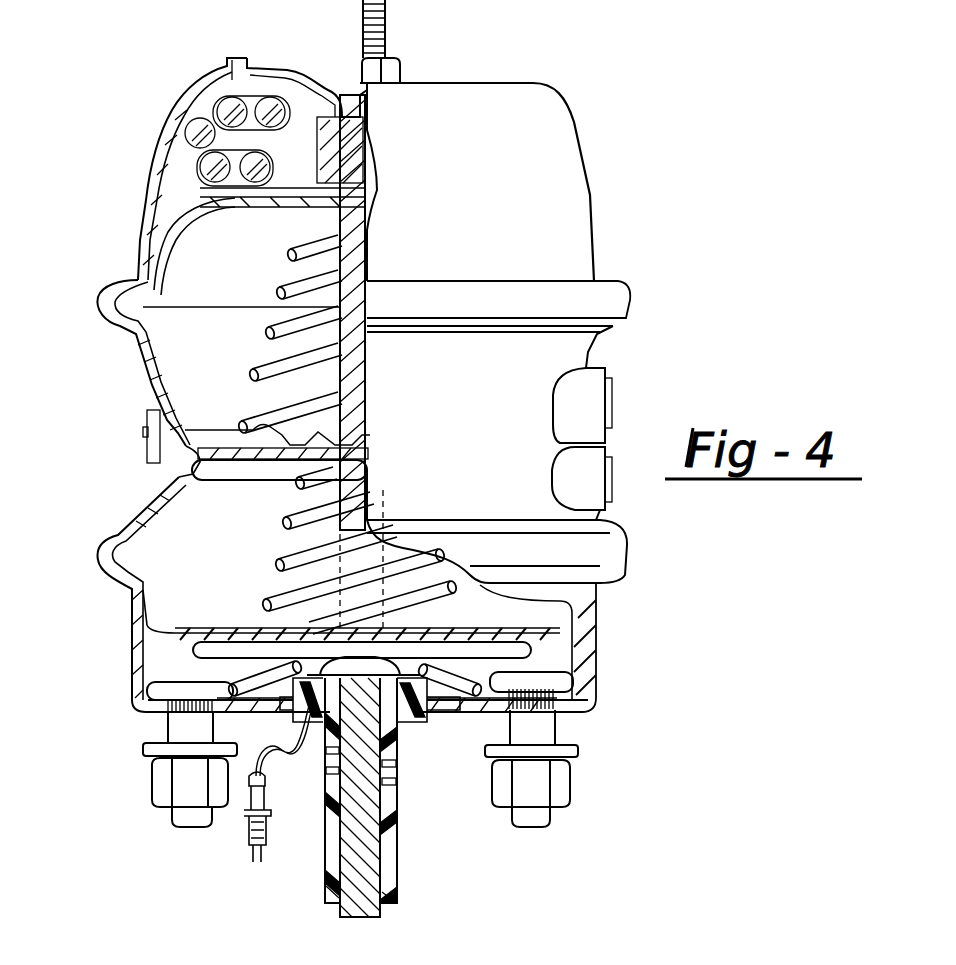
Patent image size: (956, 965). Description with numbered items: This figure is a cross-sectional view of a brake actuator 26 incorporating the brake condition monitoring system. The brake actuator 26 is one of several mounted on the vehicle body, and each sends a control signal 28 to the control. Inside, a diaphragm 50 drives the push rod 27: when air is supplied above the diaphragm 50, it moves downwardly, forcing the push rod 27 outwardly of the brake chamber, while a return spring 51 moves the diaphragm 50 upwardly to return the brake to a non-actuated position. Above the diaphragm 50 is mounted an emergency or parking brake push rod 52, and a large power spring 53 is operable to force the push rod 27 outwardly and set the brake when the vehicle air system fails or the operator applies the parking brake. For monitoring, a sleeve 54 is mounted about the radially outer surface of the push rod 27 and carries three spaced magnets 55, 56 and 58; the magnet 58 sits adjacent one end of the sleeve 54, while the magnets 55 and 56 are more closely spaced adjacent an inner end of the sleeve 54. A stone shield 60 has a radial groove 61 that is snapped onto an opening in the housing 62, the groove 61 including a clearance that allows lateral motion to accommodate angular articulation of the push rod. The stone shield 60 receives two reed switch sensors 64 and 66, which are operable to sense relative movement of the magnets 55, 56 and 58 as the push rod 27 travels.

The brake actuator 26 is at (656, 290).
The push rod 27 is at (362, 893).
The control signal 28 is at (252, 850).
The diaphragm 50 is at (185, 472).
The return spring 51 is at (285, 525).
The emergency or parking brake push rod 52 is at (345, 338).
The power spring 53 is at (205, 168).
The sleeve 54 is at (398, 845).
The magnet 55 is at (397, 800).
The magnet 56 is at (393, 760).
The magnet 58 is at (398, 882).
The stone shield 60 is at (405, 712).
The radial groove 61 is at (440, 708).
The housing 62 is at (143, 703).
The reed switch sensor 64 is at (300, 712).
The reed switch sensor 66 is at (320, 700).